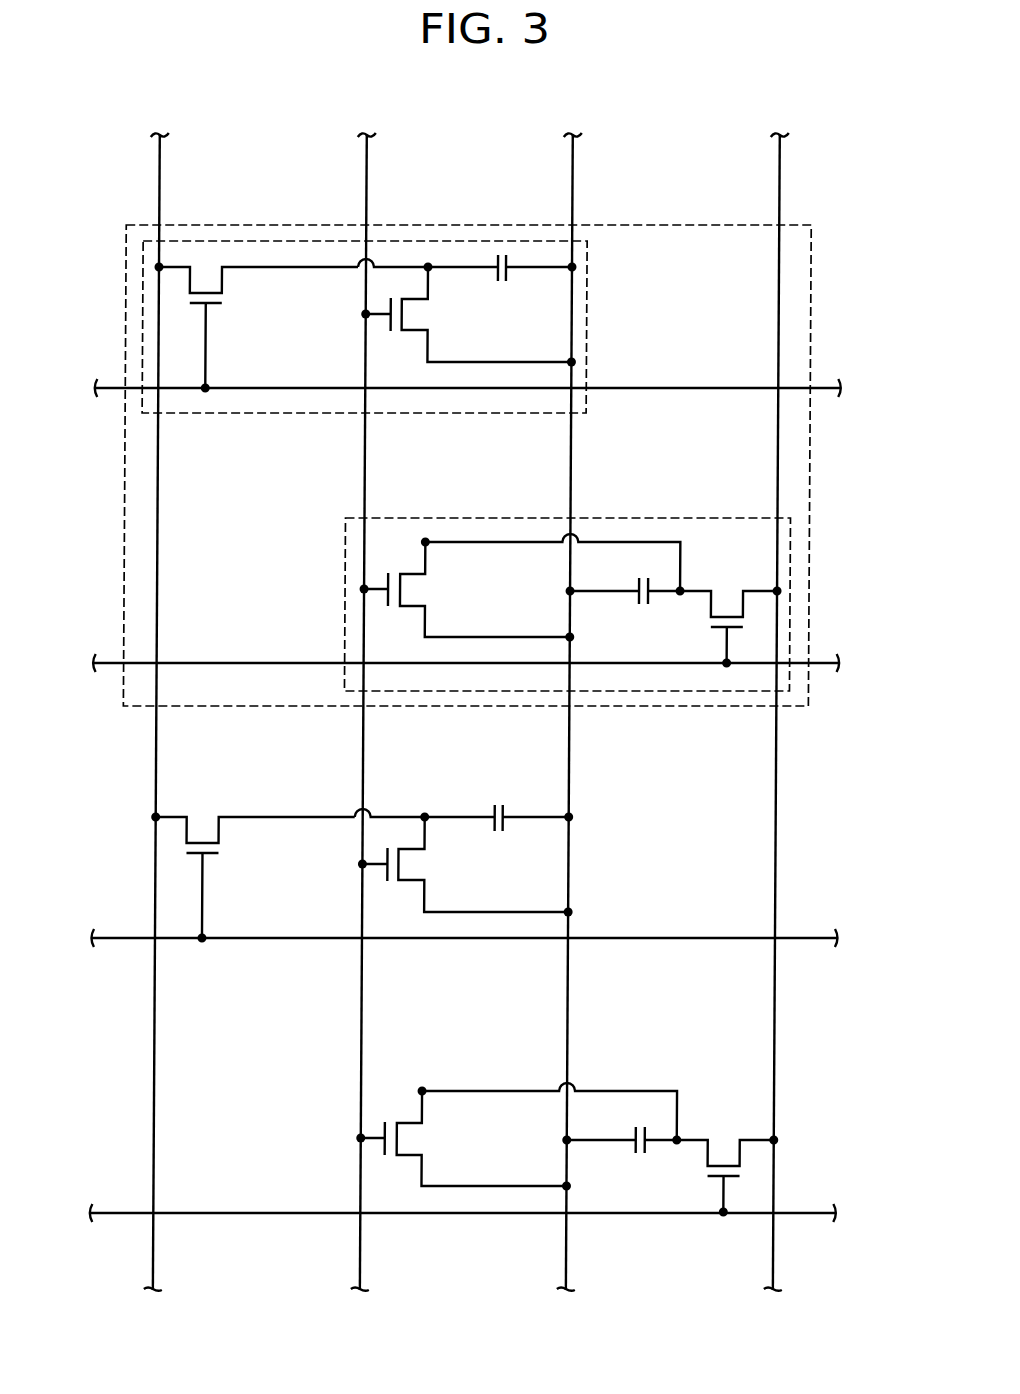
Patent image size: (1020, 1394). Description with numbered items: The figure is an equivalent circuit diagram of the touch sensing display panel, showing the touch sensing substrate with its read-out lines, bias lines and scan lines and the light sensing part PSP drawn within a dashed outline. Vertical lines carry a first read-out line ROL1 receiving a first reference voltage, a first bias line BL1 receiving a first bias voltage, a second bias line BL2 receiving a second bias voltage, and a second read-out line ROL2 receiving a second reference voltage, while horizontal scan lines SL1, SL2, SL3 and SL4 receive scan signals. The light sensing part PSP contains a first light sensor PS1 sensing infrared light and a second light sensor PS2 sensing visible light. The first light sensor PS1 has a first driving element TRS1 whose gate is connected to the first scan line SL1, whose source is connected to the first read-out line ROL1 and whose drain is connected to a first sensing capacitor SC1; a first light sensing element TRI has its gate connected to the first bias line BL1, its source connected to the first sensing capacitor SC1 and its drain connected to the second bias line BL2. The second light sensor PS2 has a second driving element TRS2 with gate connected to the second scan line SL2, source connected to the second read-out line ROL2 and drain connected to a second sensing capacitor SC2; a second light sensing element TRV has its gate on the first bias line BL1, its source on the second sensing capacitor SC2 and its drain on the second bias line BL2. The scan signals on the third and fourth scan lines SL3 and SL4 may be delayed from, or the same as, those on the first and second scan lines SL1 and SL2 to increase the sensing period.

The first read-out line ROL1 is at (156, 696).
The second read-out line ROL2 is at (778, 697).
The first bias line BL1 is at (362, 697).
The second bias line BL2 is at (569, 697).
The first scan line SL1 is at (444, 387).
The second scan line SL2 is at (443, 662).
The third scan line SL3 is at (441, 937).
The fourth scan line SL4 is at (439, 1212).
The light sensing part PSP is at (811, 308).
The first light sensor PS1 is at (143, 322).
The second light sensor PS2 is at (793, 606).
The first driving element TRS1 is at (254, 603).
The second driving element TRS2 is at (728, 890).
The first light sensing element TRI is at (465, 588).
The second light sensing element TRV is at (518, 862).
The first sensing capacitor SC1 is at (500, 557).
The second sensing capacitor SC2 is at (623, 879).